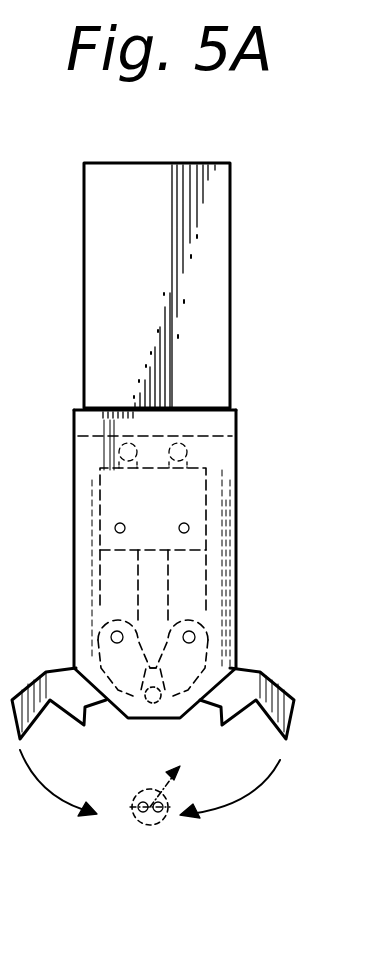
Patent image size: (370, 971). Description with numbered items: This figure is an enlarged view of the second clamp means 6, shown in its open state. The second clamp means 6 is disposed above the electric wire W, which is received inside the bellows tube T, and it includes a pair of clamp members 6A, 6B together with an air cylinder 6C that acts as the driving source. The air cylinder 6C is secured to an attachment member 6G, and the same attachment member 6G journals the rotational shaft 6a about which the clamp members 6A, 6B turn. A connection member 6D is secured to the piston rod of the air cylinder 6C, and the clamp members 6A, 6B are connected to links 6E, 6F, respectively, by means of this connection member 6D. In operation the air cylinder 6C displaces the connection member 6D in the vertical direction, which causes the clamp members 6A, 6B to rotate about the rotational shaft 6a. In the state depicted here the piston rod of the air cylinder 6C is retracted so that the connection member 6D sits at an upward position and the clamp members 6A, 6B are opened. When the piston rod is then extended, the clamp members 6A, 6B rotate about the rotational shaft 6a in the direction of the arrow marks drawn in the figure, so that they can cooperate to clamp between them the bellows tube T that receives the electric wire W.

The second clamp means 6 is at (238, 407).
The air cylinder 6C is at (232, 290).
The clamp member 6A is at (55, 680).
The clamp member 6B is at (250, 672).
The connection member 6D is at (205, 482).
The link 6E is at (113, 580).
The link 6F is at (203, 563).
The attachment member 6G is at (75, 443).
The rotational shaft 6a is at (146, 699).
The electric wire W is at (181, 781).
The bellows tube T is at (145, 827).